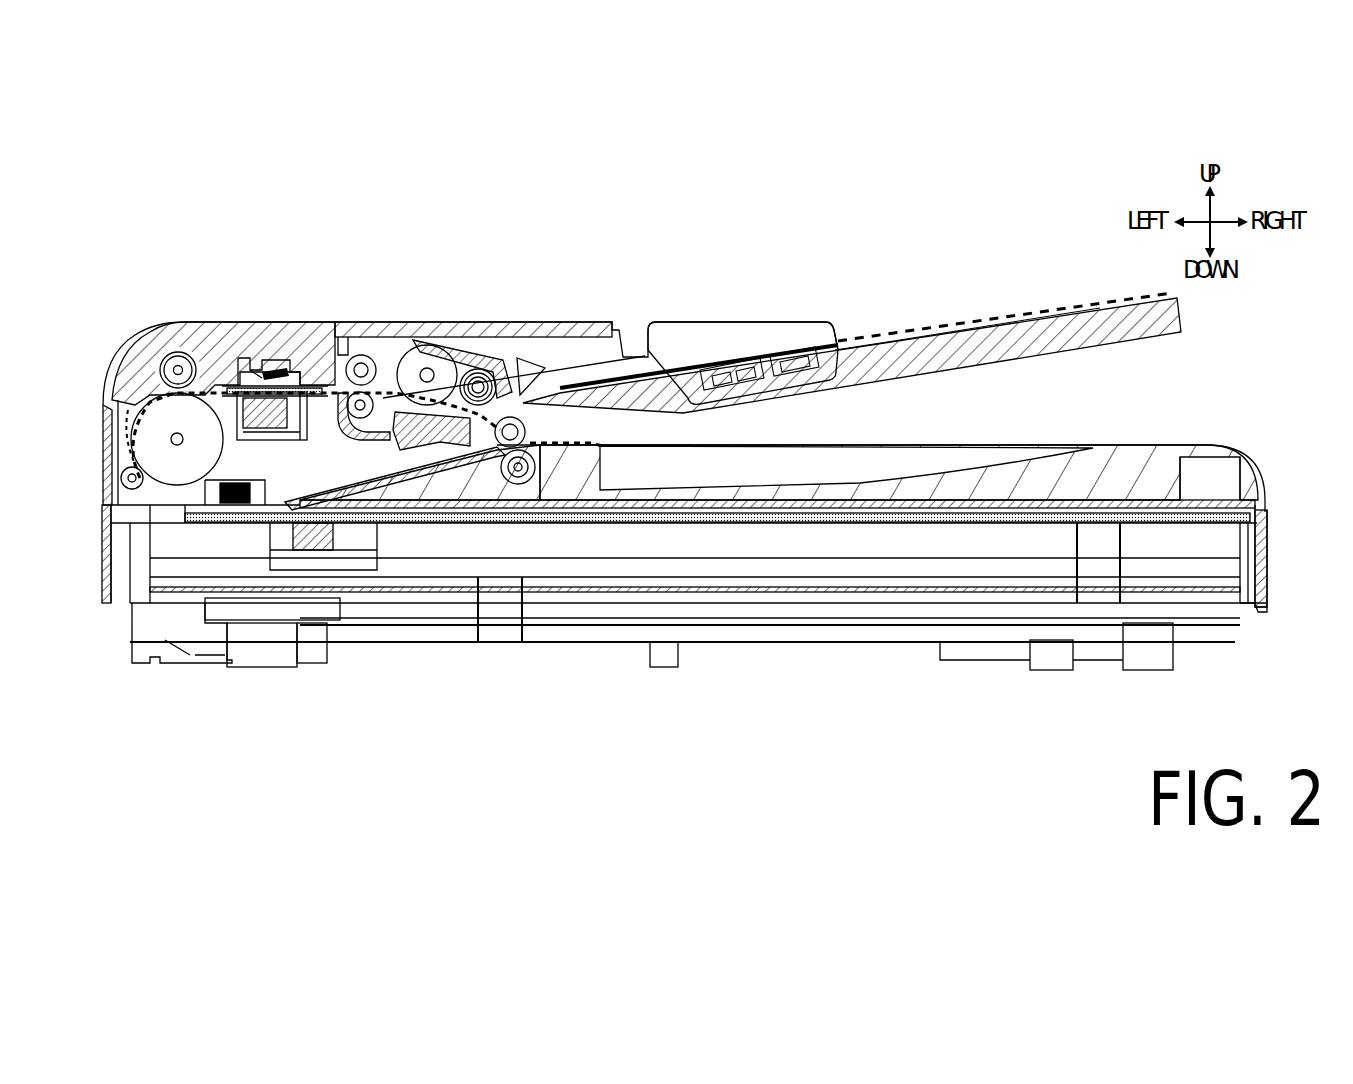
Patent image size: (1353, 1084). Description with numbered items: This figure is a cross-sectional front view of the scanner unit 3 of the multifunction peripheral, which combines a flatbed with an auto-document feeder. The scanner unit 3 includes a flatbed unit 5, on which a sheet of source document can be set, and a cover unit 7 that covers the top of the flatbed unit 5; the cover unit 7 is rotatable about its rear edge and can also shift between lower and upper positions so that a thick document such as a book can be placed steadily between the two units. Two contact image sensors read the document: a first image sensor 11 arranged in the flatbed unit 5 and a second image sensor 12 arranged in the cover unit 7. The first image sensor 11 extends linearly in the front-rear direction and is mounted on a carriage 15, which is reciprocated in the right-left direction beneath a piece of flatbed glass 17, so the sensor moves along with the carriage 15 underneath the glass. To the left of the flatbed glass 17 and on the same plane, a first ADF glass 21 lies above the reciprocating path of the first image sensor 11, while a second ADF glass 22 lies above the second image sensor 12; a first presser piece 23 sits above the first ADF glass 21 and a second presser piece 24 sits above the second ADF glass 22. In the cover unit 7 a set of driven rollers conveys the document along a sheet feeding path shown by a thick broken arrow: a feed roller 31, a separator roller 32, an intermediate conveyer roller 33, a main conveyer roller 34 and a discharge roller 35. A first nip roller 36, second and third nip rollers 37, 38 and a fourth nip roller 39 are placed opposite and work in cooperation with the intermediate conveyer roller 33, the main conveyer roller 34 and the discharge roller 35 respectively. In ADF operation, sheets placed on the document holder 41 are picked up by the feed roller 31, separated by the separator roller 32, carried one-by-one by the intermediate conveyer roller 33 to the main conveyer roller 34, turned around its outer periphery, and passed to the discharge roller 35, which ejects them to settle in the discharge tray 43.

The scanner unit 3 is at (781, 312).
The flatbed unit 5 is at (1268, 608).
The cover unit 7 is at (1262, 478).
The first image sensor 11 is at (333, 547).
The second image sensor 12 is at (252, 432).
The carriage 15 is at (372, 560).
The flatbed glass 17 is at (625, 525).
The first ADF glass 21 is at (208, 528).
The second ADF glass 22 is at (233, 388).
The first presser piece 23 is at (232, 505).
The second presser piece 24 is at (273, 378).
The feed roller 31 is at (465, 368).
The separator roller 32 is at (404, 365).
The intermediate conveyer roller 33 is at (357, 355).
The main conveyer roller 34 is at (143, 411).
The discharge roller 35 is at (560, 436).
The first nip roller 36 is at (348, 393).
The second nip roller 37 is at (176, 356).
The third nip roller 38 is at (123, 482).
The fourth nip roller 39 is at (537, 470).
The document holder 41 is at (696, 360).
The discharge tray 43 is at (873, 480).